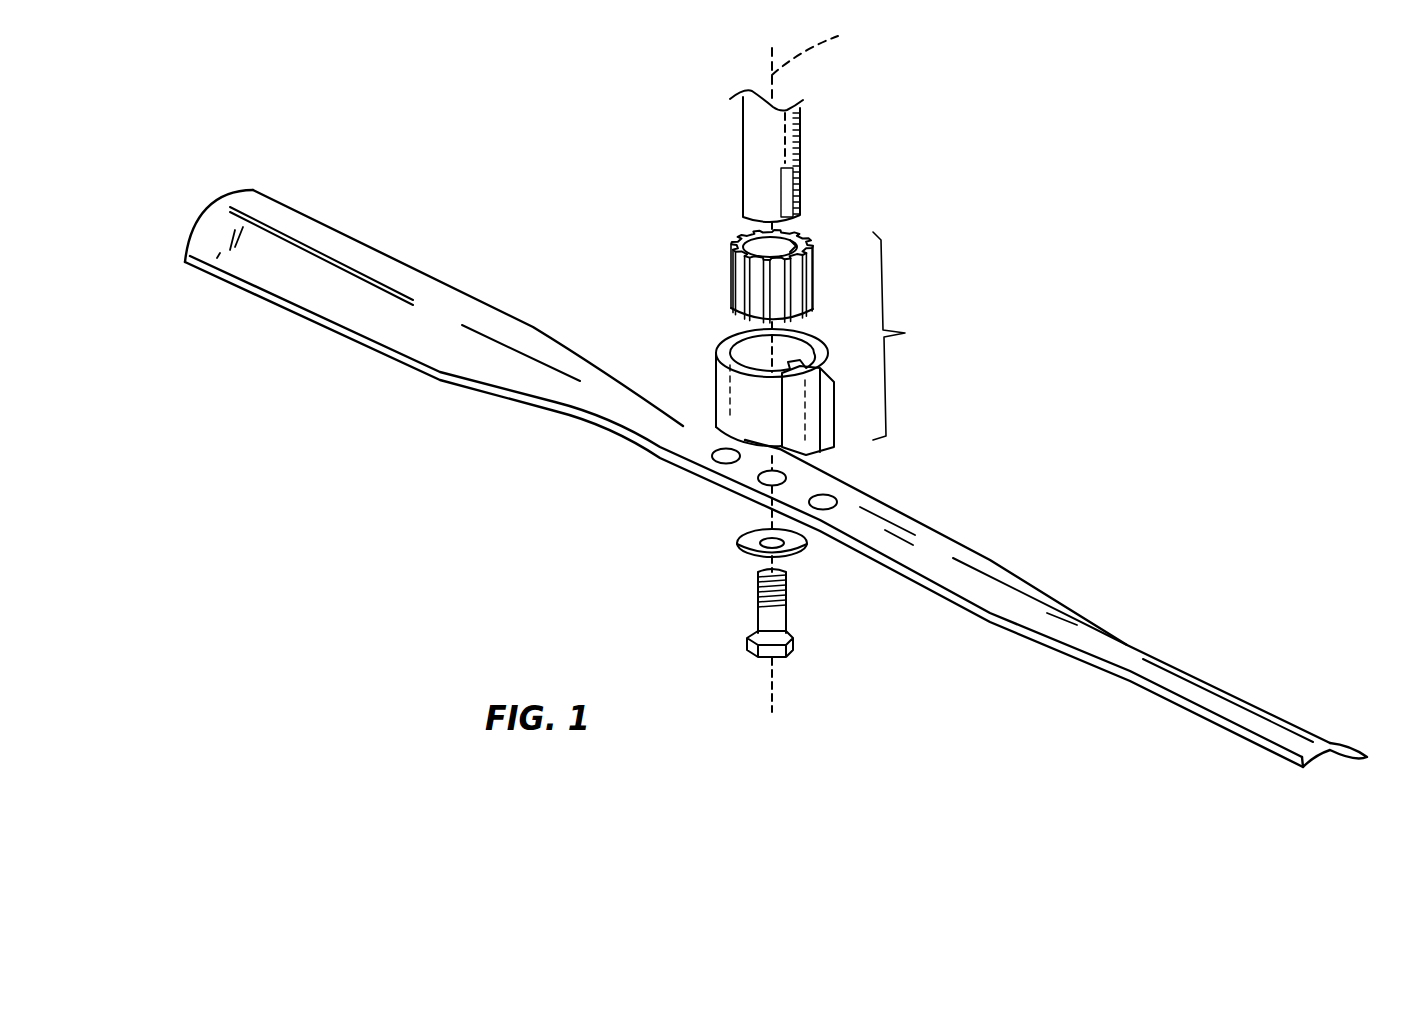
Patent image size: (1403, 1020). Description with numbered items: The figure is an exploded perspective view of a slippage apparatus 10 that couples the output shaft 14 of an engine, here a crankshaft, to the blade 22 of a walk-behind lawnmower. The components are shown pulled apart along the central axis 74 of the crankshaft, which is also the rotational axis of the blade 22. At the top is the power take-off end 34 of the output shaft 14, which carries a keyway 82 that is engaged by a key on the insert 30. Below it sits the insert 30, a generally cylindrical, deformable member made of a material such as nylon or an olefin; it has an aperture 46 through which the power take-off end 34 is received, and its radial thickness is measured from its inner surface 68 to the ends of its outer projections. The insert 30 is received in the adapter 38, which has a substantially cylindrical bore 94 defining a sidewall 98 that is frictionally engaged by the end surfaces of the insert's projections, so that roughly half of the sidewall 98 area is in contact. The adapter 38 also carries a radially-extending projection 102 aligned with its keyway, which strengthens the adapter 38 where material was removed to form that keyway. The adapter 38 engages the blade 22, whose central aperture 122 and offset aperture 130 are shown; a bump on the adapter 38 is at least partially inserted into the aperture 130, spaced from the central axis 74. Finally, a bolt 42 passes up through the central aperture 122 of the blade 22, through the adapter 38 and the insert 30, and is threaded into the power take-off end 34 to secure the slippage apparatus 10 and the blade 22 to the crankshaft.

The slippage apparatus 10 is at (788, 347).
The output shaft 14 is at (813, 156).
The blade 22 is at (776, 478).
The insert 30 is at (772, 250).
The power take-off end 34 is at (753, 158).
The adapter 38 is at (788, 408).
The bolt 42 is at (780, 613).
The aperture 46 is at (793, 233).
The inner surface 68 is at (733, 240).
The central axis 74 is at (812, 360).
The keyway 82 is at (800, 183).
The bore 94 is at (787, 350).
The sidewall 98 is at (740, 343).
The radially-extending projection 102 is at (835, 437).
The central aperture 122 is at (757, 472).
The aperture 130 is at (829, 511).